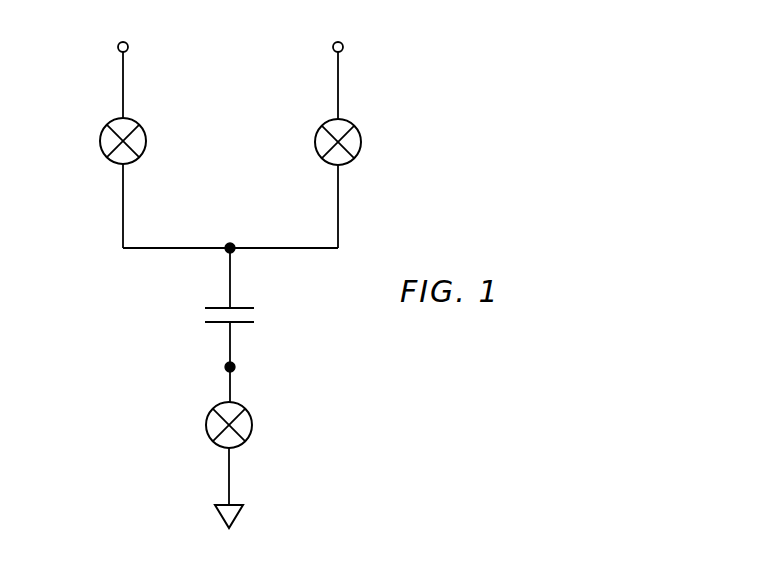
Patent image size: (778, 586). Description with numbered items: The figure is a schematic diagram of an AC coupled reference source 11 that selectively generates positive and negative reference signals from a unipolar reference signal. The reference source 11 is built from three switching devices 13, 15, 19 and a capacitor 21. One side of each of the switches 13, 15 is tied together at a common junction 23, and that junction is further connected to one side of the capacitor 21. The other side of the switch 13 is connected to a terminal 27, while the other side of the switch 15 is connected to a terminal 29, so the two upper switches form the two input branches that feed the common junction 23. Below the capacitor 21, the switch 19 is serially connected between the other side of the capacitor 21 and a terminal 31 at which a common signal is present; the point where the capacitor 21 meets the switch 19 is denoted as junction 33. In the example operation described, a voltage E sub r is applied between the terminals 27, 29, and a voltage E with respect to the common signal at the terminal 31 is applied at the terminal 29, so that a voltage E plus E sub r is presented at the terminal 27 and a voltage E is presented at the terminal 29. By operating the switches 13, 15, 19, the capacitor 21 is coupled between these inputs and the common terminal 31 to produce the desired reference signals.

The AC coupled reference source 11 is at (449, 160).
The switching device 13 is at (100, 148).
The switching device 15 is at (359, 151).
The switching device 19 is at (252, 426).
The capacitor 21 is at (240, 307).
The common junction 23 is at (233, 244).
The terminal 27 is at (117, 47).
The terminal 29 is at (344, 47).
The terminal 31 is at (238, 517).
The junction 33 is at (236, 366).